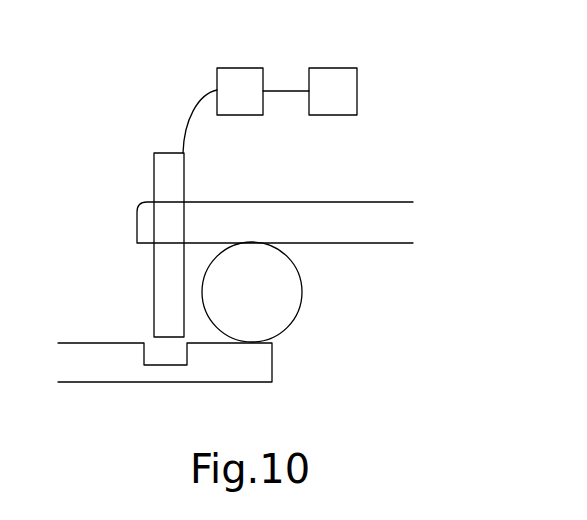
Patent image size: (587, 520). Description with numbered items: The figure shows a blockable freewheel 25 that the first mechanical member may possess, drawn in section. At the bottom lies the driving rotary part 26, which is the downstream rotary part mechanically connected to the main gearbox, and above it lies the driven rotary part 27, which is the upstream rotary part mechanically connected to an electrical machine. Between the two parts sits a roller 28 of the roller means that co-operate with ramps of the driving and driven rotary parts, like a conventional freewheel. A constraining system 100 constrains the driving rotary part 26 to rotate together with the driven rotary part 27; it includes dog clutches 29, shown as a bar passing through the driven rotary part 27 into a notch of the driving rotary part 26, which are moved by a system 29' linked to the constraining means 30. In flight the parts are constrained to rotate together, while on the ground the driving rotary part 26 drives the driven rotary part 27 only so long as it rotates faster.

The constraining system 100 is at (110, 238).
The blockable freewheel 25 is at (387, 349).
The driving rotary part 26 is at (273, 365).
The driven rotary part 27 is at (400, 202).
The roller 28 is at (302, 278).
The dog clutches 29 is at (131, 245).
The system for moving the dog clutches 29' is at (199, 91).
The constraining means 30 is at (358, 75).